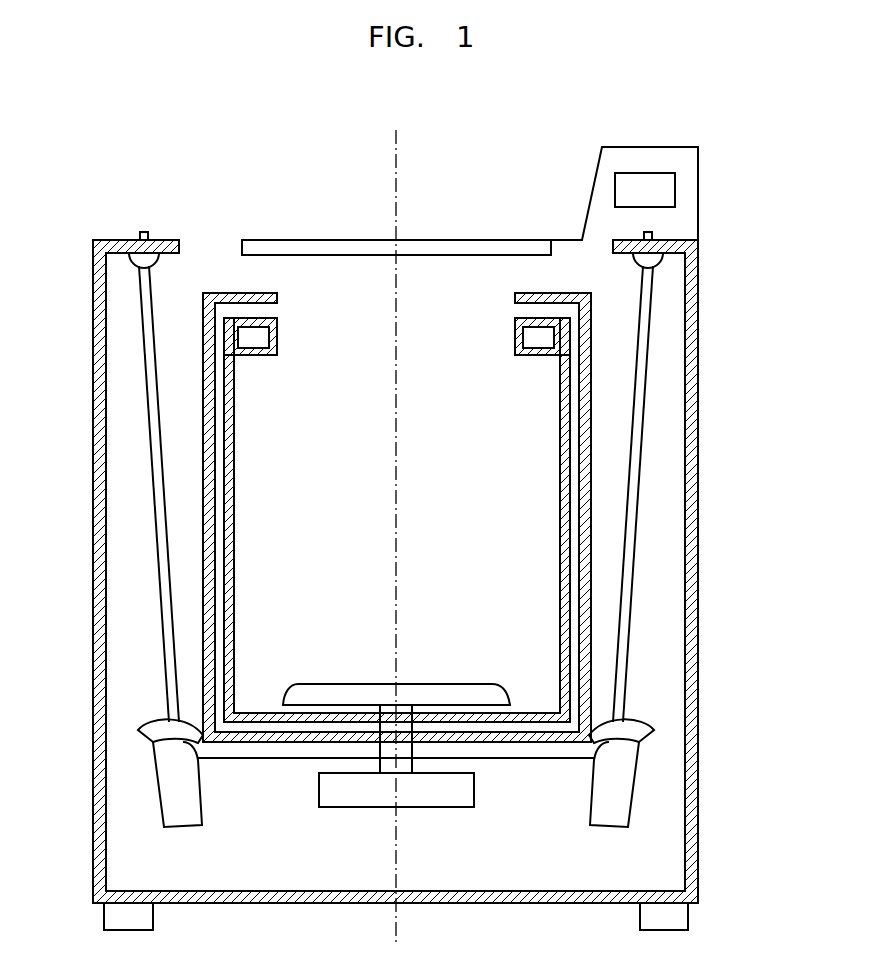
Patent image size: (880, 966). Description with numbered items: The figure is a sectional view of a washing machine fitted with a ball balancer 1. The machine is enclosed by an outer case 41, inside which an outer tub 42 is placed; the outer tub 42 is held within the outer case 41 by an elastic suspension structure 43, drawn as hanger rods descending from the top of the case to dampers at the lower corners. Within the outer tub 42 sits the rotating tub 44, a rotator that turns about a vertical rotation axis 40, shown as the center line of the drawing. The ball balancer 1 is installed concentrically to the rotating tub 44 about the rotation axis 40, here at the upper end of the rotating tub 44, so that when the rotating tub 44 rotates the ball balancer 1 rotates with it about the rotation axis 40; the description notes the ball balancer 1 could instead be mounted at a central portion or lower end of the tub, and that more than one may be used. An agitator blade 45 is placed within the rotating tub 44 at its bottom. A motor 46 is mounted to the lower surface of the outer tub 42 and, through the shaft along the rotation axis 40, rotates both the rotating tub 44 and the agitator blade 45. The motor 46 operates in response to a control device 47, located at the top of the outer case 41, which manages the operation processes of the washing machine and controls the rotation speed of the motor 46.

The ball balancer 1 is at (277, 337).
The rotation axis 40 is at (399, 183).
The outer case 41 is at (698, 313).
The outer tub 42 is at (548, 293).
The elastic suspension structure 43 is at (626, 688).
The rotating tub 44 is at (560, 512).
The agitator blade 45 is at (450, 684).
The motor 46 is at (450, 807).
The control device 47 is at (675, 190).